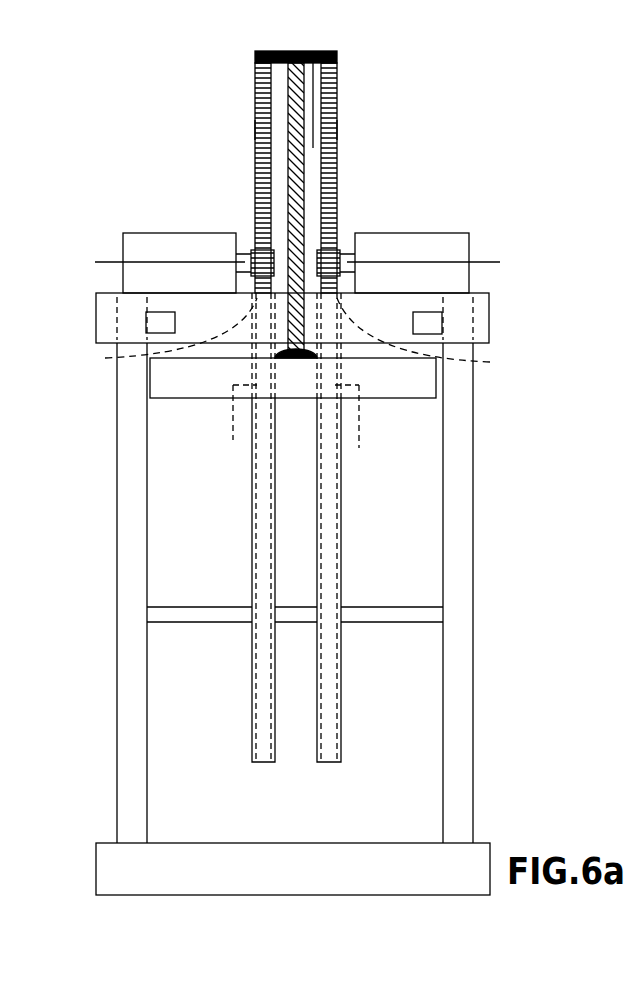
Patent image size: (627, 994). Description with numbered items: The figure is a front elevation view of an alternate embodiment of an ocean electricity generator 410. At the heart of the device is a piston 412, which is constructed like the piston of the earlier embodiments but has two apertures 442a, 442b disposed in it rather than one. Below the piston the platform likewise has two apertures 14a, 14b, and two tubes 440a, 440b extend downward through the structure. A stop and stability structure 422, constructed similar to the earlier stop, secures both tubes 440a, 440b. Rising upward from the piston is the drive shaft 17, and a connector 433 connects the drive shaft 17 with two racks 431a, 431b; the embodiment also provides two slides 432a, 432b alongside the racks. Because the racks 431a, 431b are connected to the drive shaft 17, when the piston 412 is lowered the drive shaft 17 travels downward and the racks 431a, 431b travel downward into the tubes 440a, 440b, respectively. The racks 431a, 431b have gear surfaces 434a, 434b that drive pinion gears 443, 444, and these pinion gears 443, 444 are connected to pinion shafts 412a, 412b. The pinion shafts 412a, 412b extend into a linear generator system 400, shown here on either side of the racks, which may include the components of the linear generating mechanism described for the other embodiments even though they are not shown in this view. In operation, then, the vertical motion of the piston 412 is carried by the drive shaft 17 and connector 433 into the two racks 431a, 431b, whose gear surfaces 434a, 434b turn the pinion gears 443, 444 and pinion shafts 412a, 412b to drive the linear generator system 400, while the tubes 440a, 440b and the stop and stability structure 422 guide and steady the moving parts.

The ocean electricity generator 410 is at (150, 153).
The linear generator system 400 is at (147, 243).
The piston 412 is at (208, 390).
The pinion shaft 412a is at (151, 262).
The pinion shaft 412b is at (446, 262).
The aperture 14a is at (166, 334).
The aperture 14b is at (432, 335).
The drive shaft 17 is at (298, 197).
The connector 433 is at (313, 148).
The rack 431a is at (267, 103).
The rack 431b is at (323, 103).
The slide 432a is at (255, 128).
The slide 432b is at (337, 128).
The gear surface 434a is at (262, 73).
The gear surface 434b is at (330, 73).
The pinion gear 443 is at (253, 250).
The pinion gear 444 is at (340, 250).
The tube 440a is at (255, 550).
The tube 440b is at (337, 570).
The aperture 442a is at (231, 425).
The aperture 442b is at (363, 428).
The stop and stability structure 422 is at (176, 622).